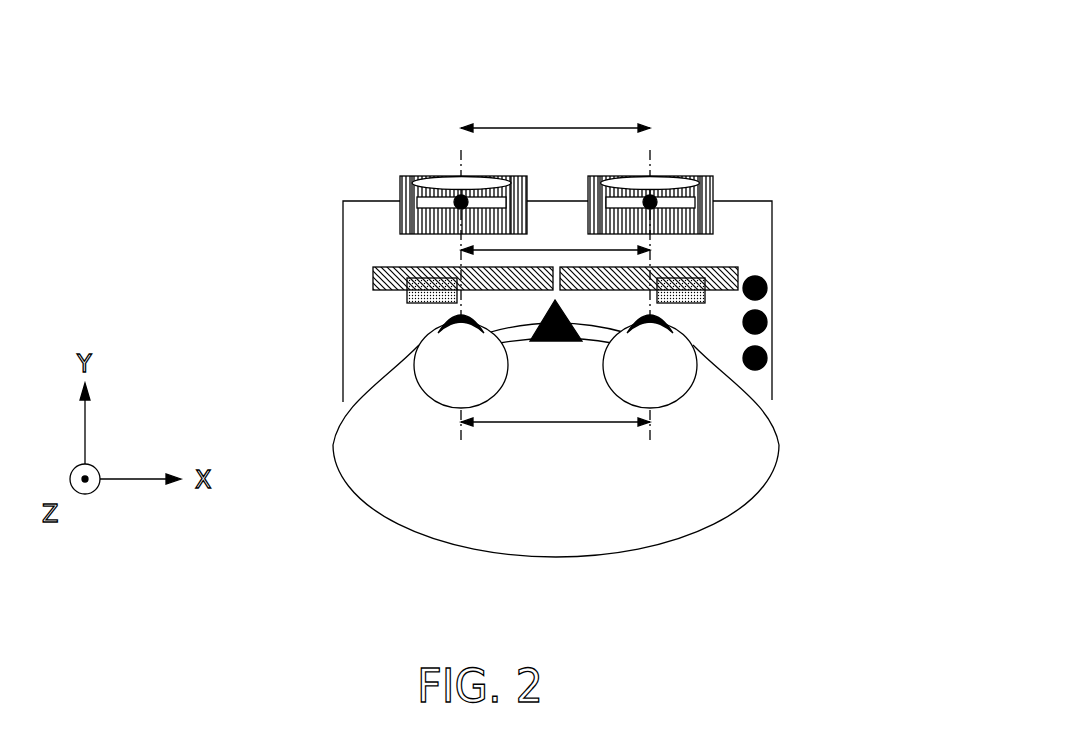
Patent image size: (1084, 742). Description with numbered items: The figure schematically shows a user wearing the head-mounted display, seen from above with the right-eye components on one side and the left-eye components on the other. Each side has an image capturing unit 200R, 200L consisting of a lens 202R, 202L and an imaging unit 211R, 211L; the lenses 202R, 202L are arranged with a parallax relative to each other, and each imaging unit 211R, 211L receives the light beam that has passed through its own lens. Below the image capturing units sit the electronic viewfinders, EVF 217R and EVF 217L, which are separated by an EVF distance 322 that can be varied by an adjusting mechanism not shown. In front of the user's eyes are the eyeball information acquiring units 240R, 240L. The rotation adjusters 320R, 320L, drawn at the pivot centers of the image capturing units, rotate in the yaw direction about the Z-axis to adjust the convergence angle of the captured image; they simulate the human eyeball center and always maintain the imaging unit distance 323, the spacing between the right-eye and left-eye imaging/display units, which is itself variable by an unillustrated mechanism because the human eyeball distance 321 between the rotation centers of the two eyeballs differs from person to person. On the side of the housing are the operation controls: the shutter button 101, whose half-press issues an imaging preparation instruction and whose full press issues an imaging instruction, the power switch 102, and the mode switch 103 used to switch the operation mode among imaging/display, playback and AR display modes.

The shutter button 101 is at (767, 289).
The power switch 102 is at (767, 324).
The mode switch 103 is at (767, 360).
The image capturing unit 200L is at (401, 136).
The image capturing unit 200R is at (718, 140).
The lens 202L is at (427, 180).
The lens 202R is at (693, 182).
The imaging unit 211L is at (412, 212).
The imaging unit 211R is at (752, 201).
The EVF 217L is at (393, 287).
The EVF 217R is at (733, 266).
The eyeball information acquiring unit 240L is at (432, 305).
The eyeball information acquiring unit 240R is at (682, 295).
The rotation adjuster 320L is at (461, 200).
The rotation adjuster 320R is at (660, 196).
The human eyeball distance 321 is at (547, 428).
The EVF distance 322 is at (450, 268).
The imaging unit distance 323 is at (557, 125).